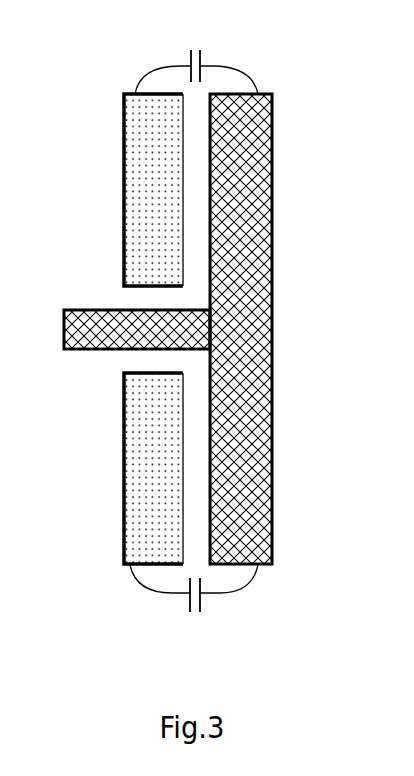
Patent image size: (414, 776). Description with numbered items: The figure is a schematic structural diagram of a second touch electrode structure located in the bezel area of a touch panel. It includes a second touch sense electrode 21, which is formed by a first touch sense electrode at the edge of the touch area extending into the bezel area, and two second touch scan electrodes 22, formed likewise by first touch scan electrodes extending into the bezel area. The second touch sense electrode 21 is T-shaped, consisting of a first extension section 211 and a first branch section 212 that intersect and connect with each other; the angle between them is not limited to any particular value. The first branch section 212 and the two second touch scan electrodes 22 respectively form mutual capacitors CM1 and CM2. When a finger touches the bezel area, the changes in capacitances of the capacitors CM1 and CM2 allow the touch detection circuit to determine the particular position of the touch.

The second touch sense electrode 21 is at (201, 290).
The first extension section 211 is at (83, 332).
The first branch section 212 is at (258, 227).
The second touch scan electrodes 22 is at (128, 158).
The mutual capacitor CM1 is at (196, 56).
The mutual capacitor CM2 is at (194, 606).